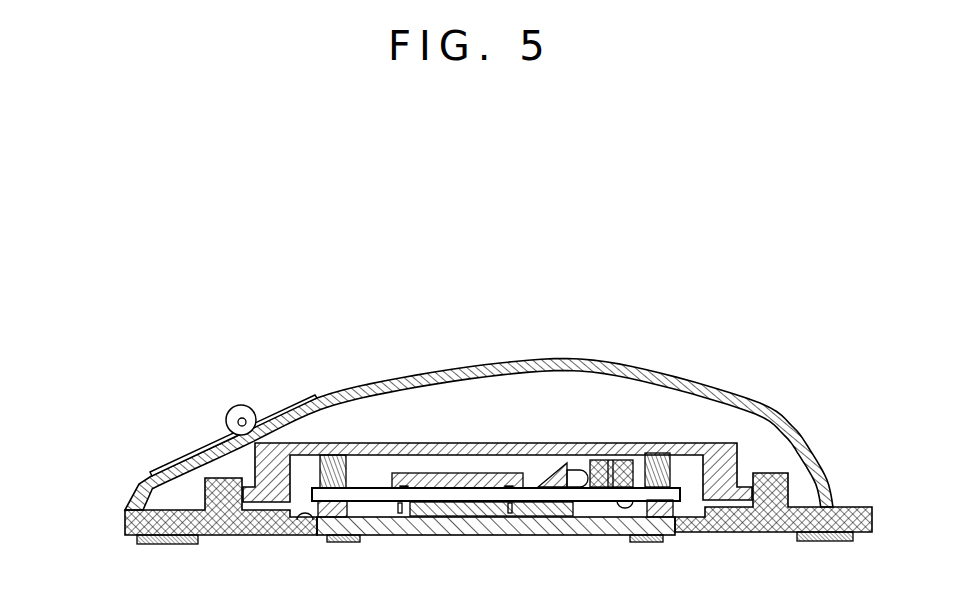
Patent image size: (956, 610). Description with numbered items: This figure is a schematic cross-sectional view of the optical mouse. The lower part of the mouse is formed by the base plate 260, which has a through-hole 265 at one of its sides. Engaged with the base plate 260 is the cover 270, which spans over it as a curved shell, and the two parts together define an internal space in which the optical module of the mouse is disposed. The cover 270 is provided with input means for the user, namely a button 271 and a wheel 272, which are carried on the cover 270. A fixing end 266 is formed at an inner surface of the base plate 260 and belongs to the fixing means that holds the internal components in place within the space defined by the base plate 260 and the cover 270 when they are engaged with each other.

The base plate 260 is at (125, 520).
The through-hole 265 is at (627, 523).
The fixing end 266 is at (315, 532).
The cover 270 is at (758, 398).
The button 271 is at (298, 400).
The wheel 272 is at (228, 415).